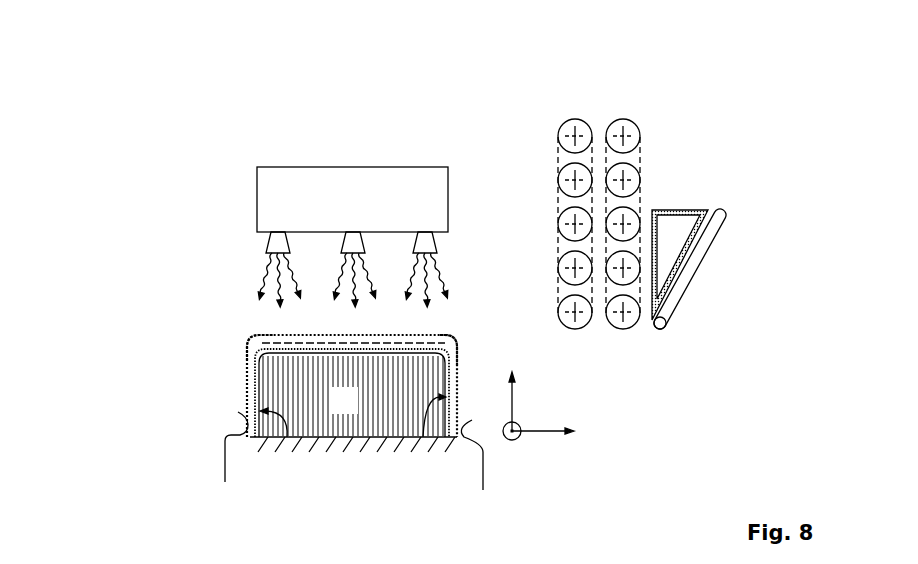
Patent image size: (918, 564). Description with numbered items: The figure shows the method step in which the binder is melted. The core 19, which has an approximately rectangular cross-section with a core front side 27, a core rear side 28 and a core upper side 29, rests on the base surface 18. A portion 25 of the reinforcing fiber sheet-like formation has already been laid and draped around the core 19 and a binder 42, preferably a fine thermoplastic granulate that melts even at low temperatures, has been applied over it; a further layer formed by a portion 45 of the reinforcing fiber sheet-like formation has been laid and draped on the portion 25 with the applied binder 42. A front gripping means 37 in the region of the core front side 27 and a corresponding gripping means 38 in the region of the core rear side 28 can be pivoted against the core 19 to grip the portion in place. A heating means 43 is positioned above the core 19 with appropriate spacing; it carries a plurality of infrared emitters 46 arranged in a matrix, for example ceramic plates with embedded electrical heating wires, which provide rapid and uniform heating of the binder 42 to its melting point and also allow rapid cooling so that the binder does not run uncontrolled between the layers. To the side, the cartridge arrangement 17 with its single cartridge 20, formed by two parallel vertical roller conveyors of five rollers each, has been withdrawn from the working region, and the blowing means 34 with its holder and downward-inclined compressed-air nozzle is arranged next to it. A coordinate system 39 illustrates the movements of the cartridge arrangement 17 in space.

The cartridge arrangement 17 is at (621, 167).
The cartridge 20 is at (600, 92).
The blowing means 34 is at (665, 181).
The heating means 43 is at (341, 213).
The infrared emitters 46 is at (425, 247).
The portion 45 is at (260, 338).
The binder 42 is at (264, 343).
The portion 25 is at (255, 380).
The core 19 is at (334, 412).
The core upper side 29 is at (420, 353).
The core front side 27 is at (287, 443).
The base surface 18 is at (340, 440).
The core rear side 28 is at (423, 443).
The front gripping means 37 is at (225, 470).
The gripping means 38 is at (485, 479).
The coordinate system 39 is at (520, 428).